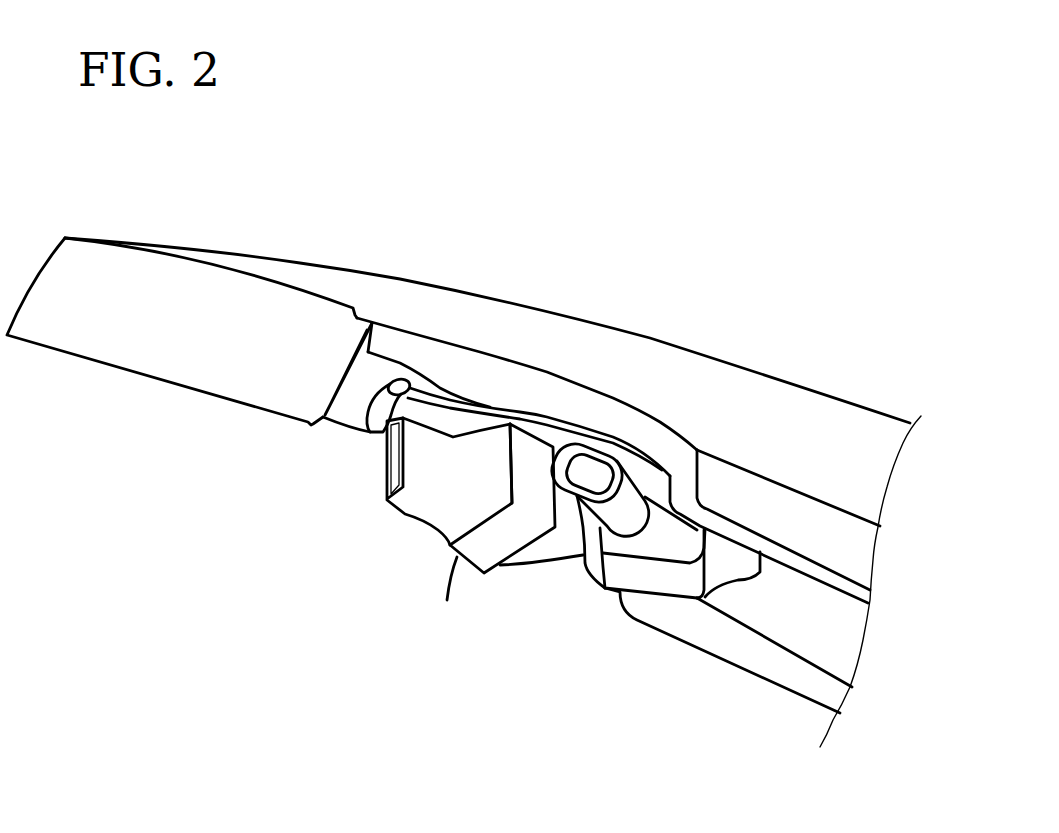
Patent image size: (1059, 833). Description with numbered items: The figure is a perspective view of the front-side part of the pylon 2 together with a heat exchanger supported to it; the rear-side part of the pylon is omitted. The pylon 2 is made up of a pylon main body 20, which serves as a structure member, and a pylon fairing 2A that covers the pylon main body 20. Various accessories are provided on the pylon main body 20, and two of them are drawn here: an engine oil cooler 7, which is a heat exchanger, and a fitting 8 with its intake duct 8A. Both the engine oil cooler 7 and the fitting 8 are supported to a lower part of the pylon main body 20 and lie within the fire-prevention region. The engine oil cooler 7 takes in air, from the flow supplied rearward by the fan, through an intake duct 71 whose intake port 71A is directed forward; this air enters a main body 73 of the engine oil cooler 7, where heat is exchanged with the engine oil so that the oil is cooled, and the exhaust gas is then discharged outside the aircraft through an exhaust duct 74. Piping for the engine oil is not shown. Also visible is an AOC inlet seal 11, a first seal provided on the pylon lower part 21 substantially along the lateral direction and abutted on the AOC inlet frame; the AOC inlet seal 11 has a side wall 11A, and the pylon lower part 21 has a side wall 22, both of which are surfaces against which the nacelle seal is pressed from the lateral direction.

The pylon 2 is at (613, 265).
The pylon fairing 2A is at (693, 363).
The pylon main body 20 is at (607, 410).
The engine oil cooler 7 is at (533, 430).
The fitting 8 is at (690, 603).
The intake duct 8A is at (590, 528).
The AOC inlet seal 11 is at (378, 386).
The side wall 11A is at (407, 380).
The pylon lower part 21 is at (440, 392).
The side wall 22 is at (472, 408).
The intake duct 71 is at (410, 515).
The intake port 71A is at (385, 489).
The main body 73 is at (477, 552).
The exhaust duct 74 is at (537, 567).